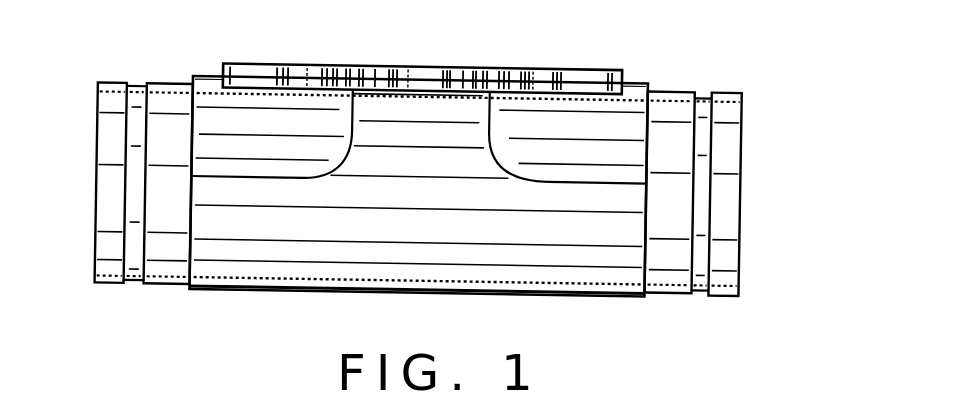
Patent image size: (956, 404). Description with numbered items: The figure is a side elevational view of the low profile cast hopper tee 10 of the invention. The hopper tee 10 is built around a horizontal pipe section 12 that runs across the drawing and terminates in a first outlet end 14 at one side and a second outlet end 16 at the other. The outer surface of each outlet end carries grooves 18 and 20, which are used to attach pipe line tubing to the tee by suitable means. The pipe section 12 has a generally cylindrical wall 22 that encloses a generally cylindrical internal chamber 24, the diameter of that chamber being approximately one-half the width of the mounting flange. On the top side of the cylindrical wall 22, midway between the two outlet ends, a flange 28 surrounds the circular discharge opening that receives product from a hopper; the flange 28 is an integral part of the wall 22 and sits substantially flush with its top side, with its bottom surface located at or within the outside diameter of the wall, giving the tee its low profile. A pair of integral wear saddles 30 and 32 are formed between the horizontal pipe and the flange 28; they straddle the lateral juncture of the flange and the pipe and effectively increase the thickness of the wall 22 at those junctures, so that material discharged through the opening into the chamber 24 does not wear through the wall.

The cast hopper tee 10 is at (643, 56).
The horizontal pipe section 12 is at (172, 248).
The first outlet end 14 is at (742, 204).
The second outlet end 16 is at (98, 202).
The groove 18 is at (701, 296).
The groove 20 is at (137, 100).
The cylindrical wall 22 is at (419, 173).
The internal chamber 24 is at (598, 130).
The flange 28 is at (425, 76).
The wear saddle 30 is at (607, 152).
The wear saddle 32 is at (237, 125).